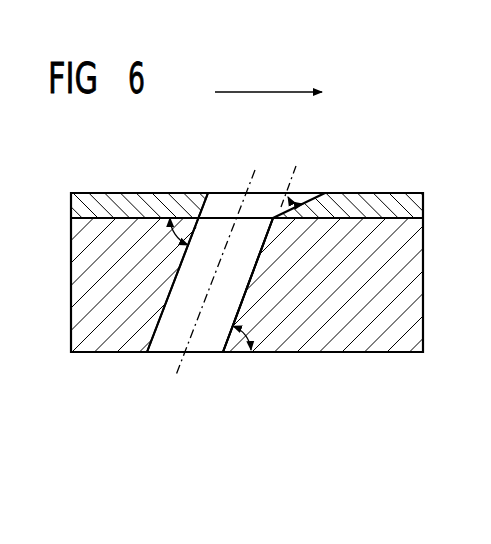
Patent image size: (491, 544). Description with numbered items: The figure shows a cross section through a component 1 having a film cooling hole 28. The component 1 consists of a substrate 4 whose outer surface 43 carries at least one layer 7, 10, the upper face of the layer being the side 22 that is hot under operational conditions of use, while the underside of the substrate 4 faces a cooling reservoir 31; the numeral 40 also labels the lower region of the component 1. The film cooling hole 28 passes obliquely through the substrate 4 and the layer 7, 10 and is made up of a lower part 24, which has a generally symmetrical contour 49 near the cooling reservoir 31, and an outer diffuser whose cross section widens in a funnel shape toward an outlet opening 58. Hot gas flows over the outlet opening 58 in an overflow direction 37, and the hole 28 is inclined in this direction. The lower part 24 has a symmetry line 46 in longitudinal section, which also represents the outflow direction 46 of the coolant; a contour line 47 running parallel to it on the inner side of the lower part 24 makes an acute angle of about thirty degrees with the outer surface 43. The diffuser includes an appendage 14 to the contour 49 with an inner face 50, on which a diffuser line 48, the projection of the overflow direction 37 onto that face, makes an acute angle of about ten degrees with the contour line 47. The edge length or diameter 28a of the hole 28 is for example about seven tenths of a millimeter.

The component 1 is at (407, 367).
The substrate 4 is at (78, 277).
The layer 7 is at (245, 161).
The layer 10 is at (88, 205).
The appendage 14 is at (293, 212).
The hot side 22 is at (136, 167).
The lower part of the film cooling hole 24 is at (228, 344).
The film cooling hole 28 is at (253, 265).
The edge length or diameter of the film cooling hole 28a is at (173, 352).
The cooling reservoir 31 is at (141, 391).
The overflow direction 37 is at (262, 92).
The bottom surface 40 is at (362, 352).
The outer surface 43 is at (410, 193).
The symmetry line / outflow direction 46 is at (243, 191).
The contour line 47 is at (165, 308).
The diffuser line 48 is at (312, 204).
The contour of the lower part 49 is at (294, 168).
The inner face of the appendage 50 is at (323, 193).
The outlet opening 58 is at (253, 172).